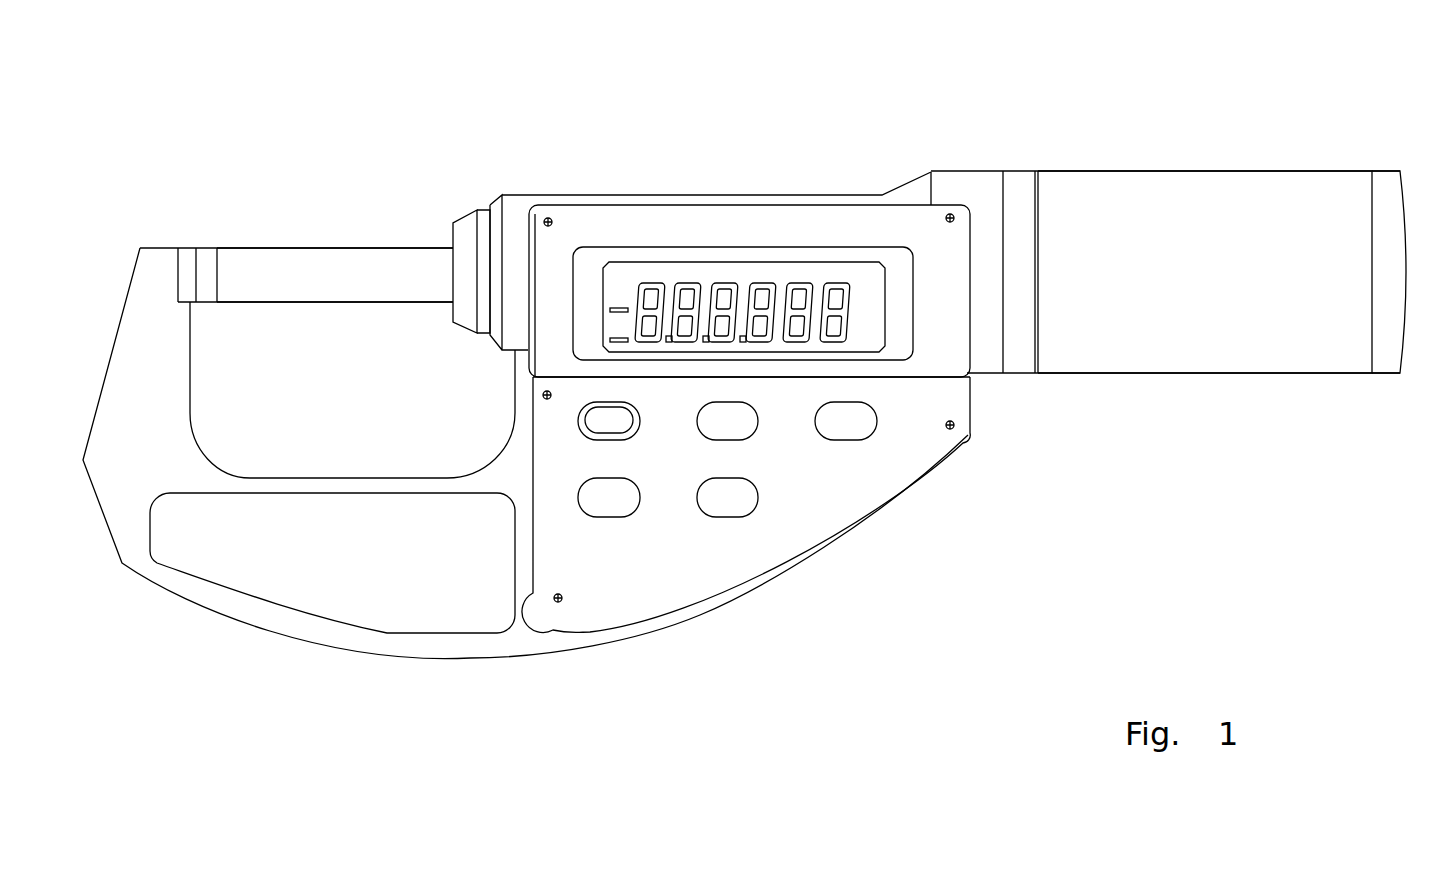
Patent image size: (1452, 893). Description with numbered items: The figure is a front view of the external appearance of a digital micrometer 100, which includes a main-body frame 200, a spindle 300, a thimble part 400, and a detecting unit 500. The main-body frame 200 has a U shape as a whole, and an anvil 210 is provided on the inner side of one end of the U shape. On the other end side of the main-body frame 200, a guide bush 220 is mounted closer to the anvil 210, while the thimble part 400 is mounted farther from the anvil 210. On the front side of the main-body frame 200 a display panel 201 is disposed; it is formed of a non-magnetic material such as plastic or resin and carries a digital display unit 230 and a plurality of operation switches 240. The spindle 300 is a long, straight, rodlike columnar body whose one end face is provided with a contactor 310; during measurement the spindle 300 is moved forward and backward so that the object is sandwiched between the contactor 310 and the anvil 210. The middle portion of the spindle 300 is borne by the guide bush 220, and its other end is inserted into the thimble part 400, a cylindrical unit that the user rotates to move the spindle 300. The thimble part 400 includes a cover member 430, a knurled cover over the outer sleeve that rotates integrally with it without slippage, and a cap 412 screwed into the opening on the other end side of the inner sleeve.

The digital micrometer 100 is at (947, 133).
The main-body frame 200 is at (410, 642).
The display panel 201 is at (740, 565).
The anvil 210 is at (192, 250).
The guide bush 220 is at (467, 230).
The digital display unit 230 is at (670, 277).
The operation switches 240 is at (713, 425).
The spindle 300 is at (320, 258).
The contactor 310 is at (207, 252).
The thimble part 400 is at (1153, 147).
The cap 412 is at (1393, 205).
The cover member 430 is at (1203, 190).
The detecting unit 500 is at (858, 203).